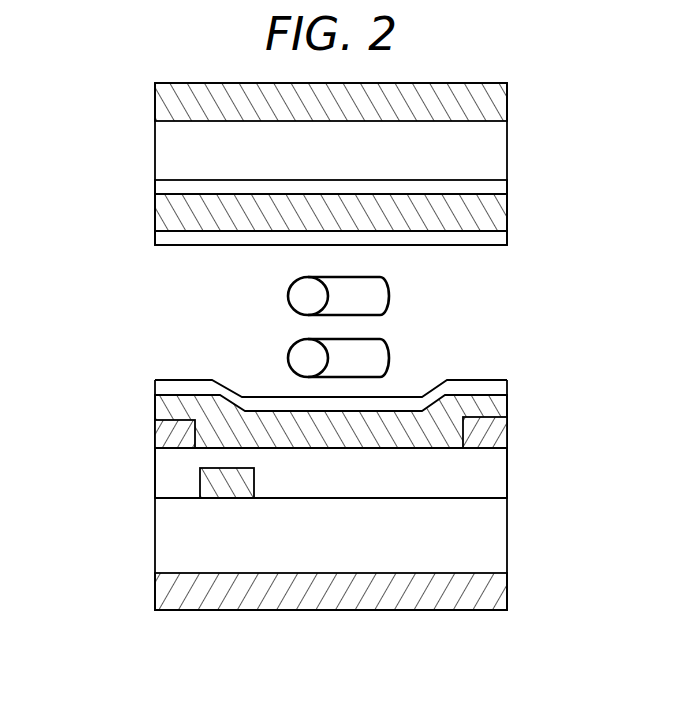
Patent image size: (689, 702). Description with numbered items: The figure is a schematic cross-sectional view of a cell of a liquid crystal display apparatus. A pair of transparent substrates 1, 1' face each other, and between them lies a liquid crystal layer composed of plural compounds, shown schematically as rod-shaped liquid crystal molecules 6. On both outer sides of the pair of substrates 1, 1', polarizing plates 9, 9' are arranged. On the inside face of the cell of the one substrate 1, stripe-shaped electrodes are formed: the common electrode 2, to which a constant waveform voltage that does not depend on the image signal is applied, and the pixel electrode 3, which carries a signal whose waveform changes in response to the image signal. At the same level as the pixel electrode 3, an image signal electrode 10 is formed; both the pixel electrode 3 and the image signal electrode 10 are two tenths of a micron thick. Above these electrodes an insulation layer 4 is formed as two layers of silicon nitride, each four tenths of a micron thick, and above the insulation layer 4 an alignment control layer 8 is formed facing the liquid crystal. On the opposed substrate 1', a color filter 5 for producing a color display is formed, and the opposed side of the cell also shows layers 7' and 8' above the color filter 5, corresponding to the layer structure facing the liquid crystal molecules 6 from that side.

The transparent substrate 1 is at (309, 495).
The transparent substrate 1' is at (306, 164).
The common electrode 2 is at (237, 488).
The pixel electrode 3 is at (495, 432).
The insulation layer 4 is at (405, 441).
The color filter 5 is at (500, 186).
The liquid crystal molecules 6 is at (297, 294).
The upper resin layer 7' is at (358, 212).
The alignment control layer 8 is at (357, 375).
The upper protective film 8' is at (358, 258).
The polarizing plate 9 is at (331, 614).
The polarizing plate 9' is at (306, 98).
The image signal electrode 10 is at (163, 438).